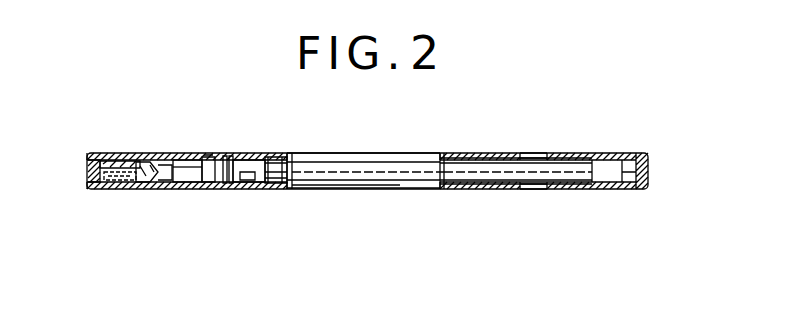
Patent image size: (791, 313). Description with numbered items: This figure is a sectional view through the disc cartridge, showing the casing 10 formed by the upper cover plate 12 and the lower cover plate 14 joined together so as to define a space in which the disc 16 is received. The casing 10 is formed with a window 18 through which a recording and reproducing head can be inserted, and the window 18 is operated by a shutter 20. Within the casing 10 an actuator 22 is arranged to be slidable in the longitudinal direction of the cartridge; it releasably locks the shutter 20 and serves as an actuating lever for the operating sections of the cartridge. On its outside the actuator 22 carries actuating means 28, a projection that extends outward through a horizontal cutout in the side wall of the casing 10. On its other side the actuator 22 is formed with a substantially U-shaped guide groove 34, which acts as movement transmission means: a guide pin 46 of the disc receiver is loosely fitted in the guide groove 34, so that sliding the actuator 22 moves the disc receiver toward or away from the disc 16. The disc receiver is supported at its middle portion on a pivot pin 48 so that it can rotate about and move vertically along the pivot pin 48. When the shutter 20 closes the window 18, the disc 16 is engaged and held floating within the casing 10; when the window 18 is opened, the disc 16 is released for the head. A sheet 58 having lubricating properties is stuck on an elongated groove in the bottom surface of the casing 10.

The casing 10 is at (658, 140).
The upper cover plate 12 is at (197, 153).
The lower cover plate 14 is at (194, 190).
The disc 16 is at (398, 185).
The window 18 is at (373, 157).
The shutter 20 is at (430, 152).
The actuator 22 is at (152, 190).
The actuating means 28 is at (90, 174).
The guide groove 34 is at (124, 160).
The guide pin 46 is at (157, 163).
The pivot pin 48 is at (233, 161).
The sheet 58 is at (533, 153).